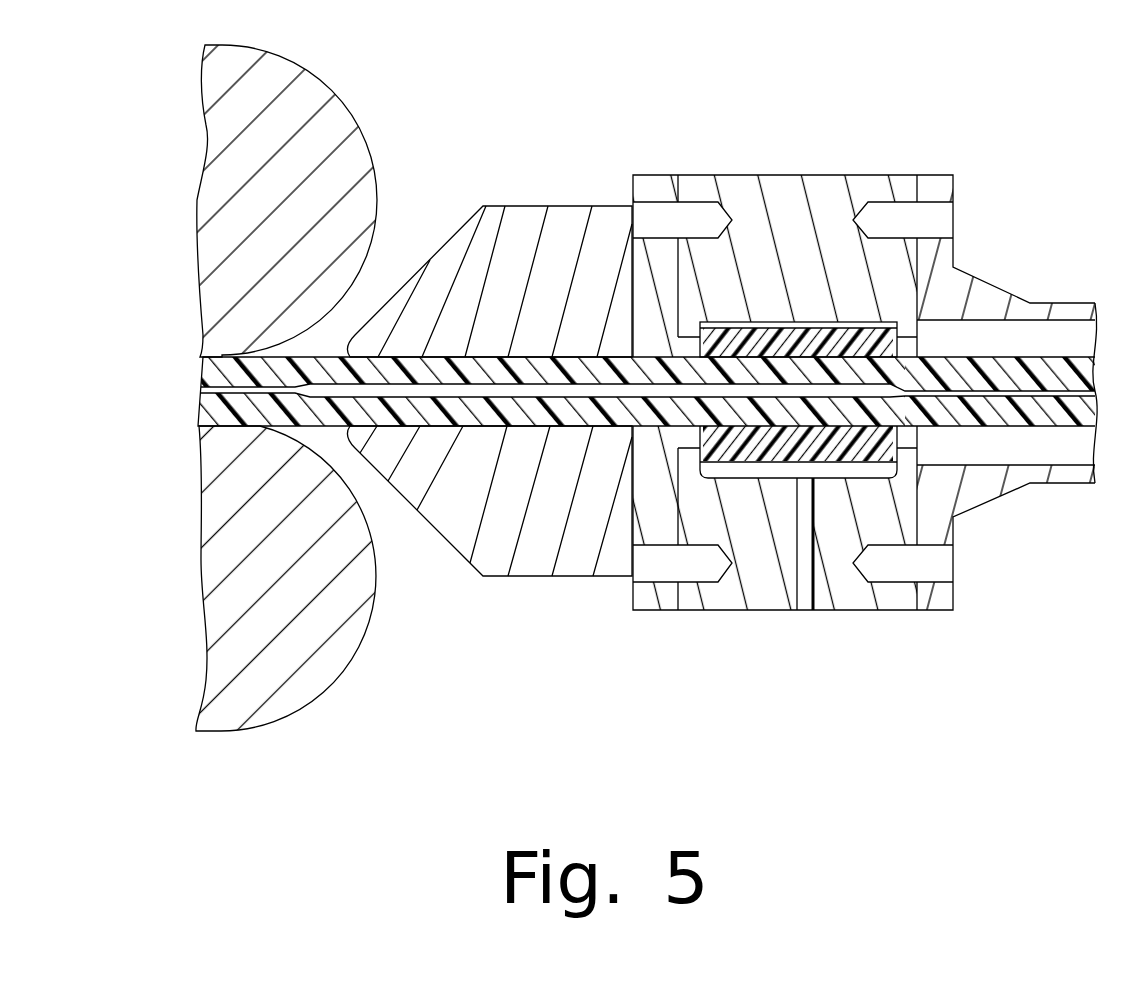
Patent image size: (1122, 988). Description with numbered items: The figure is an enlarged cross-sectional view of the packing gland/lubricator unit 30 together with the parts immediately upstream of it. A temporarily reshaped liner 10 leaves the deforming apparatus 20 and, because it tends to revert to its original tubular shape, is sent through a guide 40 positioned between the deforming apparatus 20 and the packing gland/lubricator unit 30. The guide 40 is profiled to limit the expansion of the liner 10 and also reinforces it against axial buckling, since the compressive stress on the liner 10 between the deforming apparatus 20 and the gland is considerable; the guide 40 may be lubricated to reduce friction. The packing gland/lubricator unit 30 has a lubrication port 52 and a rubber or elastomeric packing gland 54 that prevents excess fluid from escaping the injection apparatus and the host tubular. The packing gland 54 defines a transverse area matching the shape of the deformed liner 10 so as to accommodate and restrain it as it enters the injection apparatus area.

The liner 10 is at (212, 406).
The deforming apparatus 20 is at (268, 258).
The packing gland/lubricator unit 30 is at (760, 587).
The guide 40 is at (515, 237).
The lubrication port 52 is at (805, 598).
The packing gland 54 is at (898, 330).